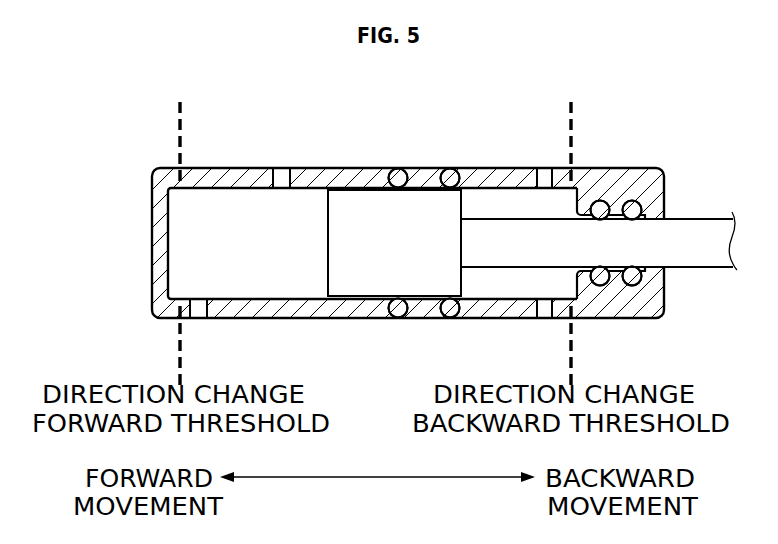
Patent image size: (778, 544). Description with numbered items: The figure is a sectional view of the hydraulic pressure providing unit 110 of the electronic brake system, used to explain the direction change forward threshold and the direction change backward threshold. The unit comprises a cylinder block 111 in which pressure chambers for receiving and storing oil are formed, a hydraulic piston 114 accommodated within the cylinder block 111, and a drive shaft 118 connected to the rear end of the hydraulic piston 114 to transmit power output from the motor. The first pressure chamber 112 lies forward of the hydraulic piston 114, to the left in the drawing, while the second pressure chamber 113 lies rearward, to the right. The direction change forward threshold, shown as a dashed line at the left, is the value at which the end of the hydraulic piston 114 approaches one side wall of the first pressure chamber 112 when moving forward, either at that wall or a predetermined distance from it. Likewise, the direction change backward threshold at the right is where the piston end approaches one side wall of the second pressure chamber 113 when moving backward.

The hydraulic pressure providing unit 110 is at (406, 238).
The cylinder block 111 is at (161, 229).
The first pressure chamber 112 is at (287, 277).
The second pressure chamber 113 is at (527, 284).
The hydraulic piston 114 is at (354, 198).
The drive shaft 118 is at (720, 257).